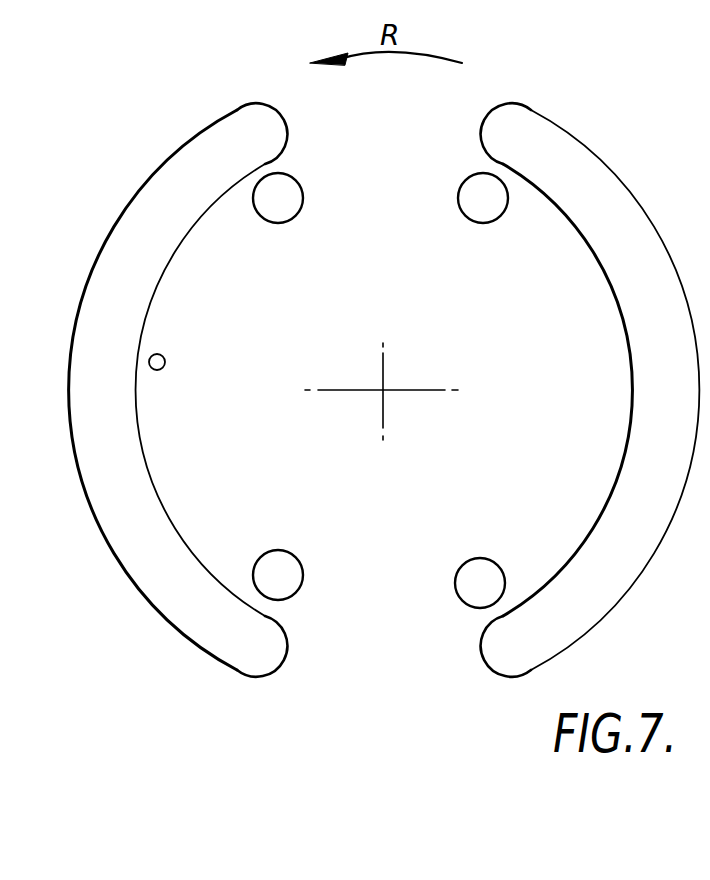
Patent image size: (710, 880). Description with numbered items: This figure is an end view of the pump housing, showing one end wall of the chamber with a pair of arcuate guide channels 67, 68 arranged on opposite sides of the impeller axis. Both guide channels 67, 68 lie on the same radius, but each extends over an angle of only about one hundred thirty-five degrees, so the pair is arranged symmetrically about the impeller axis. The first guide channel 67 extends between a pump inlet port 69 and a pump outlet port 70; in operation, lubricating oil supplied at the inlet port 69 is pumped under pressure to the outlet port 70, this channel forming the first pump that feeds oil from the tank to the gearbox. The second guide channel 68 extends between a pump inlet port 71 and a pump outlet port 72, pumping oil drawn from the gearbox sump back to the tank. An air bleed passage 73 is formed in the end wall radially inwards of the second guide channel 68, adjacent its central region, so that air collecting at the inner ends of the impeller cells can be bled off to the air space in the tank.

The first guide channel 67 is at (515, 125).
The second guide channel 68 is at (233, 131).
The pump inlet port 69 is at (474, 572).
The pump outlet port 70 is at (473, 212).
The pump inlet port 71 is at (275, 209).
The pump outlet port 72 is at (285, 570).
The passage 73 is at (163, 366).